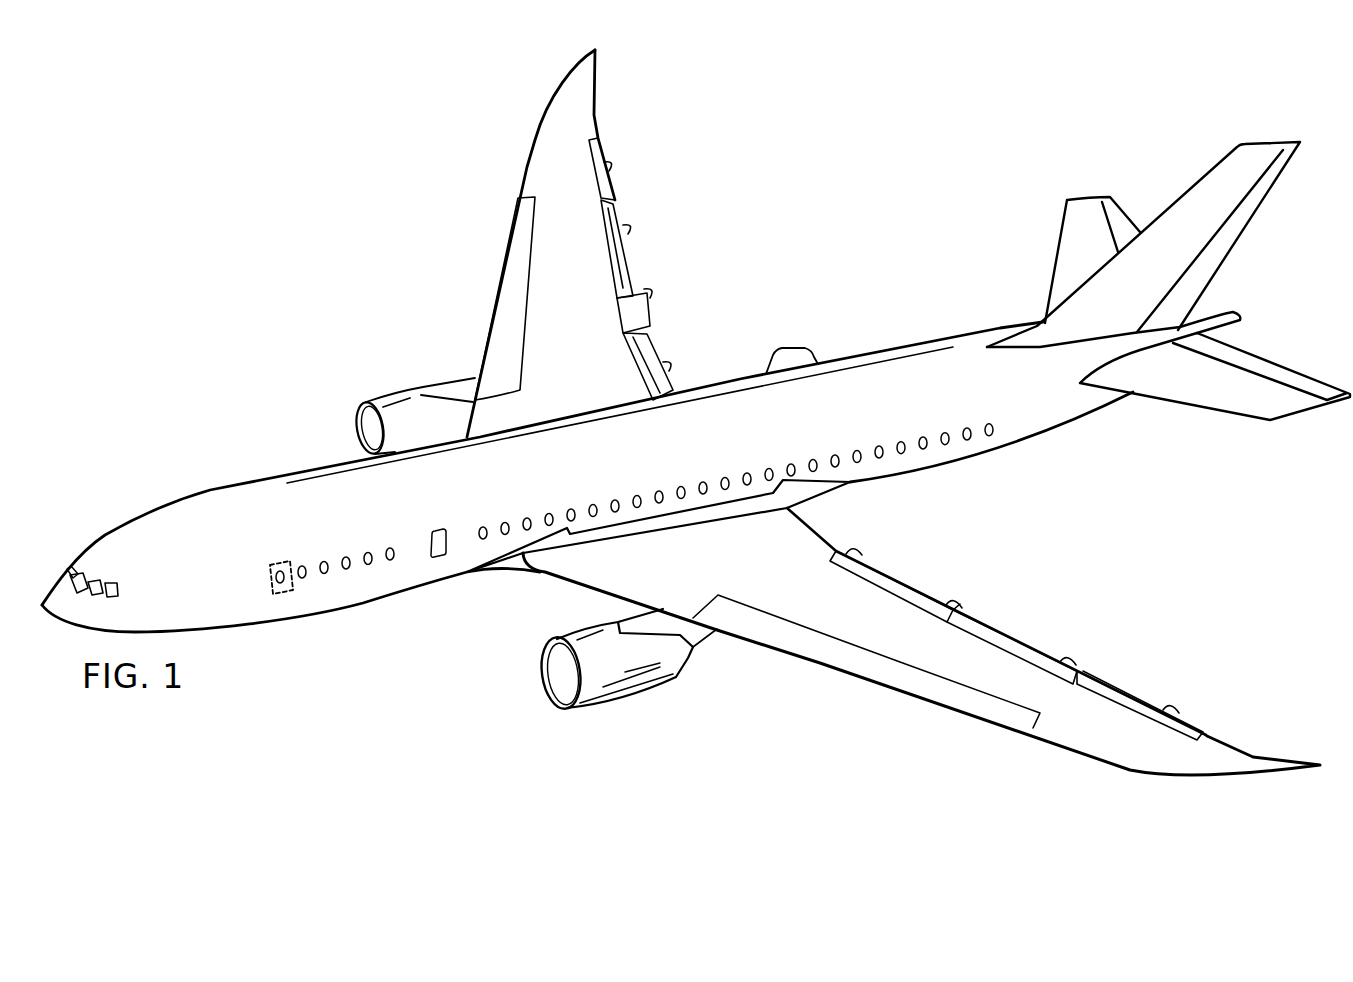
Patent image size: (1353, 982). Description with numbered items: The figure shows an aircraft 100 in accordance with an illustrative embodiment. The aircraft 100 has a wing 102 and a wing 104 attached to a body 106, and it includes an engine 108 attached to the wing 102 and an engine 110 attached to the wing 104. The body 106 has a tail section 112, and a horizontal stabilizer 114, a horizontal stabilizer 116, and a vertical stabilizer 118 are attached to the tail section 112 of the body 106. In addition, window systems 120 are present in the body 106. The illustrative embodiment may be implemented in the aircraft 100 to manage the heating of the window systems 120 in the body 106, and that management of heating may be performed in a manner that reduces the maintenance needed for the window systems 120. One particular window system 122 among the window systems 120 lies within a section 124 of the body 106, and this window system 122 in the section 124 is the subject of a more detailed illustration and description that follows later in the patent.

The aircraft 100 is at (336, 289).
The wing 102 is at (598, 88).
The wing 104 is at (1167, 777).
The body 106 is at (216, 487).
The engine 108 is at (393, 389).
The engine 110 is at (631, 697).
The tail section 112 is at (1119, 455).
The horizontal stabilizer 114 is at (1057, 255).
The horizontal stabilizer 116 is at (1223, 409).
The vertical stabilizer 118 is at (1248, 227).
The window systems 120 is at (315, 546).
The window system 122 is at (275, 566).
The section 124 is at (284, 592).